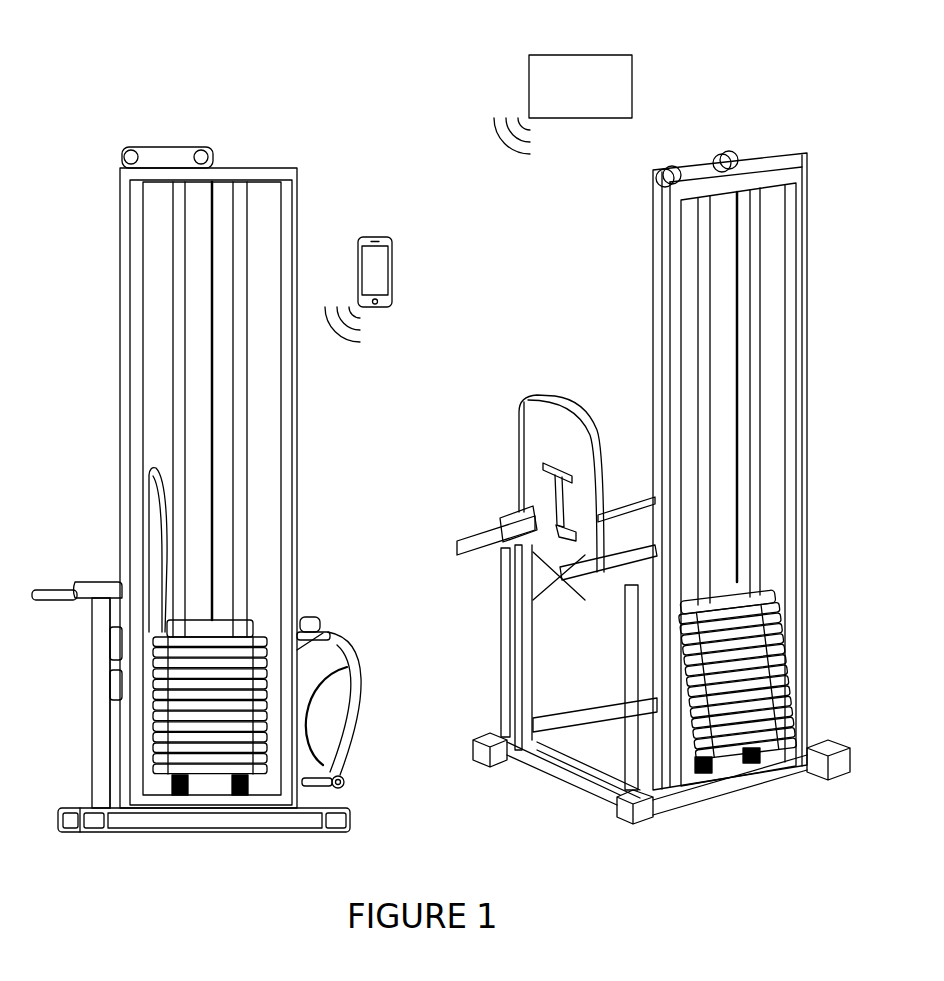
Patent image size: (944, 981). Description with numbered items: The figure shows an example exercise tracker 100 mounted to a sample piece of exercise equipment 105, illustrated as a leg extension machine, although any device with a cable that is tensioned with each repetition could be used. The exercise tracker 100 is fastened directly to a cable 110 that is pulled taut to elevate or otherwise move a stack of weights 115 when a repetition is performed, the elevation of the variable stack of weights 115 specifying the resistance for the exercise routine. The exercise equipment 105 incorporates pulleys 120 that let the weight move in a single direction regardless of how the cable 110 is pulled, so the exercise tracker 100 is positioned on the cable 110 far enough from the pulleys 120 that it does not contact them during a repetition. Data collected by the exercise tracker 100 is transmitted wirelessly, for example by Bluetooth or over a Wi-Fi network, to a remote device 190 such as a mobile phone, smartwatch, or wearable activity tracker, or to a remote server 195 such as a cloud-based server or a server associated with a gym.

The exercise tracker 100 is at (443, 466).
The exercise equipment 105 is at (264, 158).
The cable 110 is at (210, 413).
The stack of weights 115 is at (157, 722).
The pulleys 120 is at (201, 147).
The remote device 190 is at (392, 266).
The remote server 195 is at (598, 55).